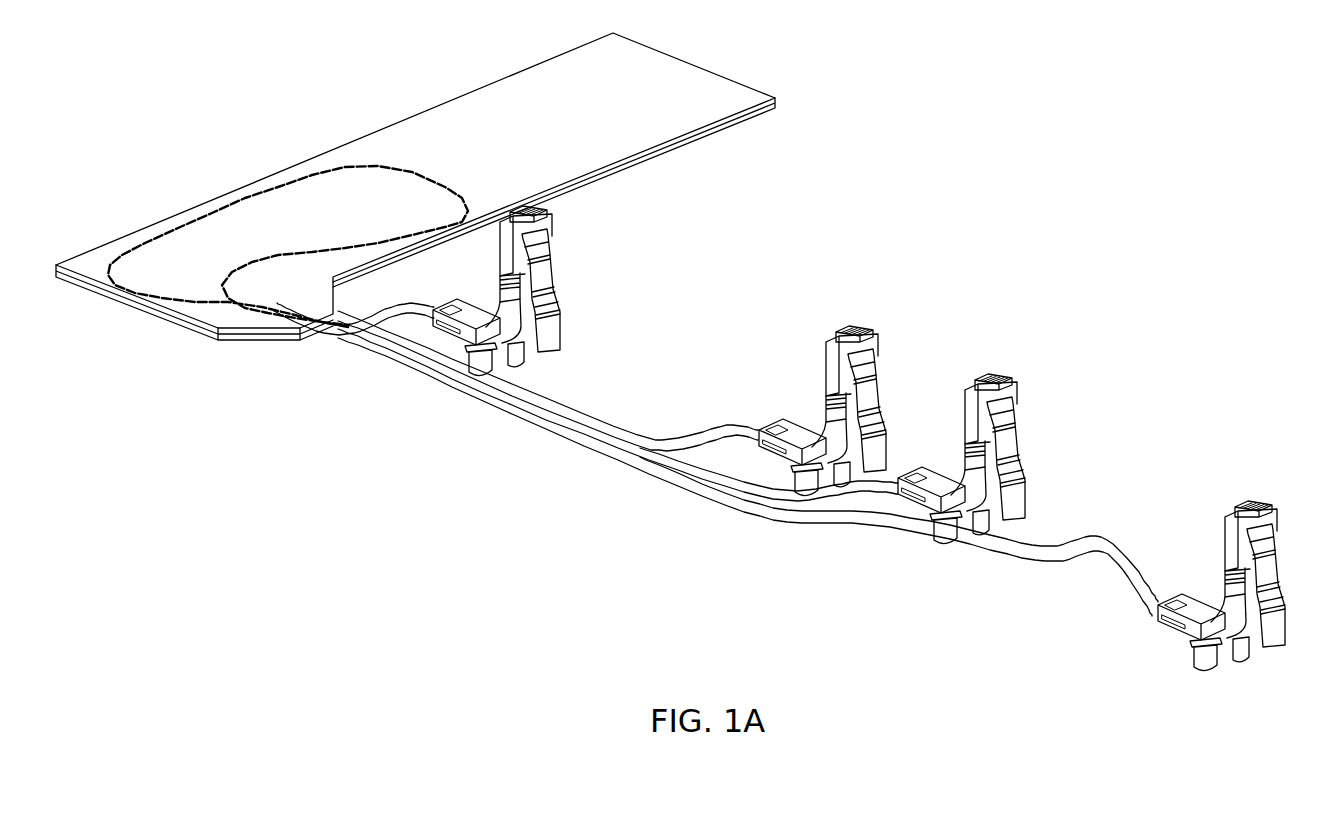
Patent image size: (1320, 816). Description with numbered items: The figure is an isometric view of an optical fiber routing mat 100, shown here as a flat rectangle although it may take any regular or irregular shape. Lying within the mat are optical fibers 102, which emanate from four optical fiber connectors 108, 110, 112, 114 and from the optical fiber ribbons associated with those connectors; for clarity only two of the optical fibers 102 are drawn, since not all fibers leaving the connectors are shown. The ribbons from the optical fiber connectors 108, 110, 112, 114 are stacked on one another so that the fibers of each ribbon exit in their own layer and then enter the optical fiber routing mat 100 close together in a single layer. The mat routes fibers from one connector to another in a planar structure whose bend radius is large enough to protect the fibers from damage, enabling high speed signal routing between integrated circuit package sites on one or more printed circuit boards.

The optical fiber routing mat 100 is at (745, 86).
The optical fibers 102 is at (370, 165).
The optical fiber connector 108 is at (553, 237).
The optical fiber connector 110 is at (877, 359).
The optical fiber connector 112 is at (1021, 410).
The optical fiber connector 114 is at (1225, 529).